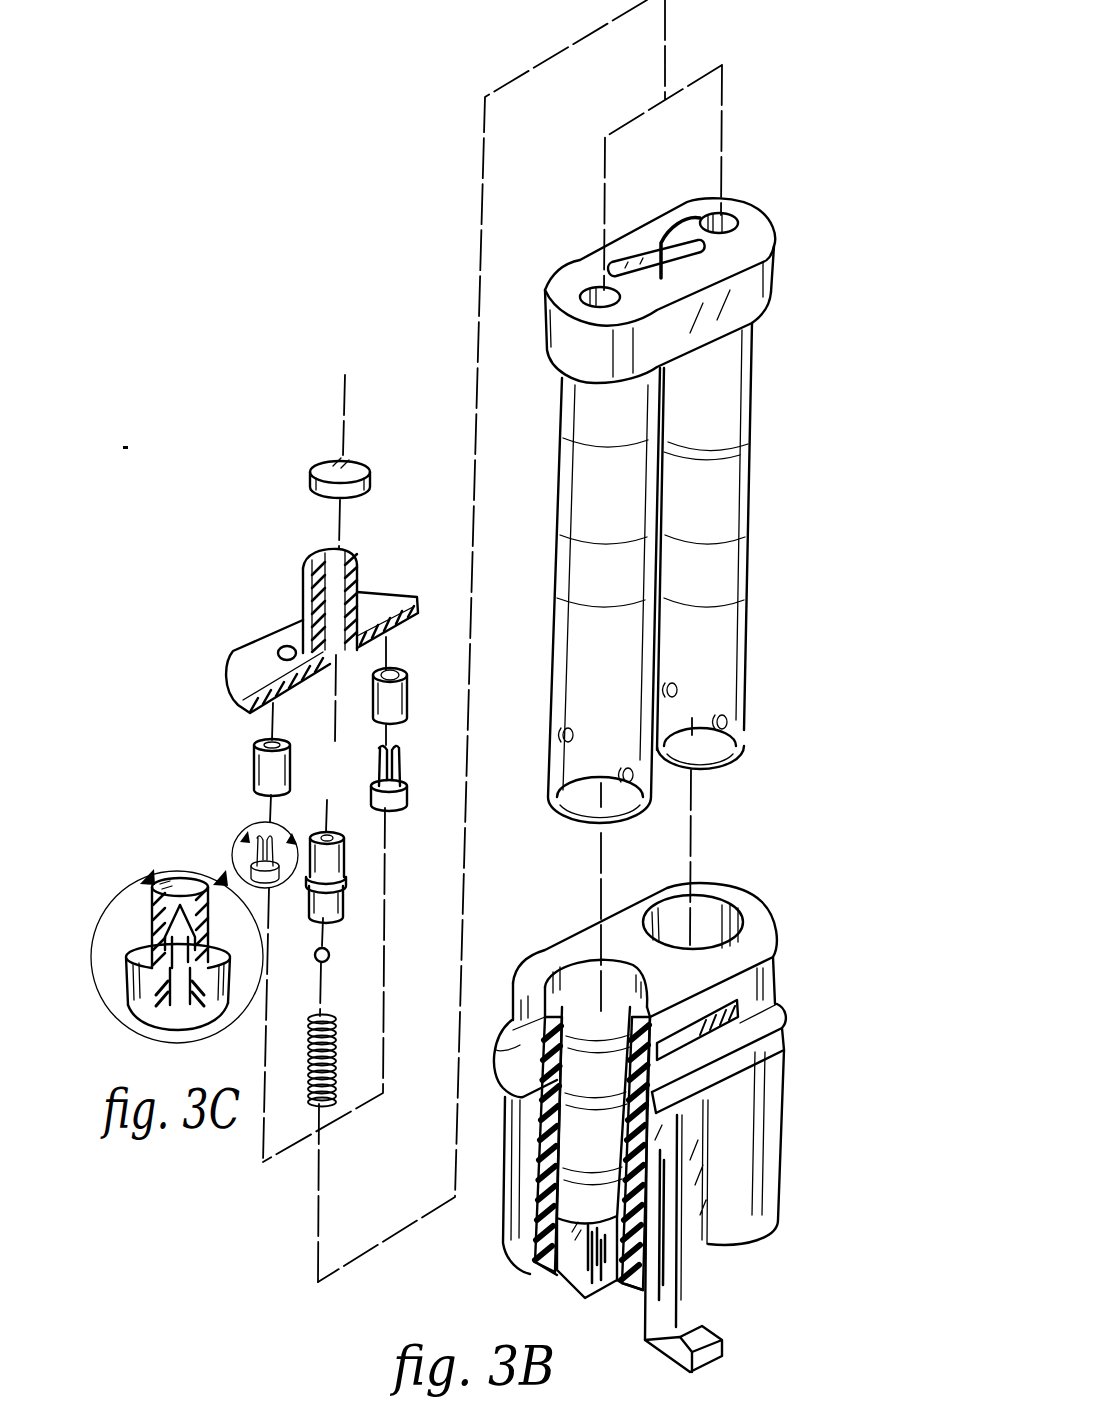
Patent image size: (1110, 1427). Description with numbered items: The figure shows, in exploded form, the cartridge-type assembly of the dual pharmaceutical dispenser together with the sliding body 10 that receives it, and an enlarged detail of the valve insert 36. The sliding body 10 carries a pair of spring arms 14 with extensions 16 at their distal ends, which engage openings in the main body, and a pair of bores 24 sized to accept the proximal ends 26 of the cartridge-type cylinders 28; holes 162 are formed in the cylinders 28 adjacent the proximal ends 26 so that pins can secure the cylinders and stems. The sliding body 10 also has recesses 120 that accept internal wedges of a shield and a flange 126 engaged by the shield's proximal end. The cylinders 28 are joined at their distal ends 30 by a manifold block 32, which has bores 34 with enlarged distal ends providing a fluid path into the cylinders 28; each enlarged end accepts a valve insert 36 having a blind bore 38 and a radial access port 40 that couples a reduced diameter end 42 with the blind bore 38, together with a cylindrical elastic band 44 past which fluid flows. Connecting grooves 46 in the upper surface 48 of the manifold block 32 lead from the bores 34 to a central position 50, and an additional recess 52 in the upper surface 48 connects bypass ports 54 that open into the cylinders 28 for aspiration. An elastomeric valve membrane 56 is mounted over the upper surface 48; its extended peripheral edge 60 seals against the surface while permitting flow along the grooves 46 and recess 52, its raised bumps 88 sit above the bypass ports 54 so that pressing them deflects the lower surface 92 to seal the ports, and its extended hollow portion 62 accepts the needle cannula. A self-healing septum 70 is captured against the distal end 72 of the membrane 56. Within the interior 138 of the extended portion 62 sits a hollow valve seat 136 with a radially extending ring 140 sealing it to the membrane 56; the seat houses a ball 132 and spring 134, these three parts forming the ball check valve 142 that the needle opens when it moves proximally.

In FIG. 3B, the sliding body 10 is at (813, 950).
In FIG. 3B, the spring arms 14 is at (693, 1277).
In FIG. 3B, the extensions 16 is at (713, 1347).
In FIG. 3B, the bores 24 is at (718, 920).
In FIG. 3B, the proximal ends 26 is at (735, 758).
In FIG. 3B, the cartridge-type cylinders 28 is at (750, 487).
In FIG. 3B, the distal ends 30 is at (757, 330).
In FIG. 3B, the manifold block 32 is at (782, 289).
In FIG. 3B, the bores 34 is at (736, 204).
In FIG. 3B, the valve insert 36 is at (401, 773).
In FIG. 3C, the valve insert 36 is at (128, 1003).
In FIG. 3C, the blind bore 38 is at (185, 1005).
In FIG. 3C, the radial access port 40 is at (157, 935).
In FIG. 3C, the reduced diameter end 42 is at (162, 925).
In FIG. 3B, the cylindrical elastic band 44 is at (407, 690).
In FIG. 3B, the connecting grooves 46 is at (693, 210).
In FIG. 3B, the upper surface 48 is at (757, 240).
In FIG. 3B, the central position 50 is at (646, 240).
In FIG. 3B, the recess 52 is at (613, 267).
In FIG. 3B, the bypass ports 54 is at (771, 305).
In FIG. 3B, the elastomeric valve membrane 56 is at (402, 587).
In FIG. 3B, the extended peripheral edge 60 is at (413, 615).
In FIG. 3B, the extended hollow portion 62 is at (307, 597).
In FIG. 3B, the self-healing septum 70 is at (362, 466).
In FIG. 3B, the distal end 72 is at (340, 556).
In FIG. 3B, the raised bumps 88 is at (283, 653).
In FIG. 3B, the lower surface 92 is at (275, 713).
In FIG. 3B, the recesses 120 is at (738, 1012).
In FIG. 3B, the flange 126 is at (722, 1073).
In FIG. 3B, the ball 132 is at (330, 955).
In FIG. 3B, the spring 134 is at (328, 1050).
In FIG. 3B, the hollow valve seat 136 is at (340, 862).
In FIG. 3B, the interior 138 is at (390, 733).
In FIG. 3B, the radially extending ring 140 is at (347, 877).
In FIG. 3B, the ball check valve 142 is at (350, 925).
In FIG. 3B, the holes 162 is at (723, 714).